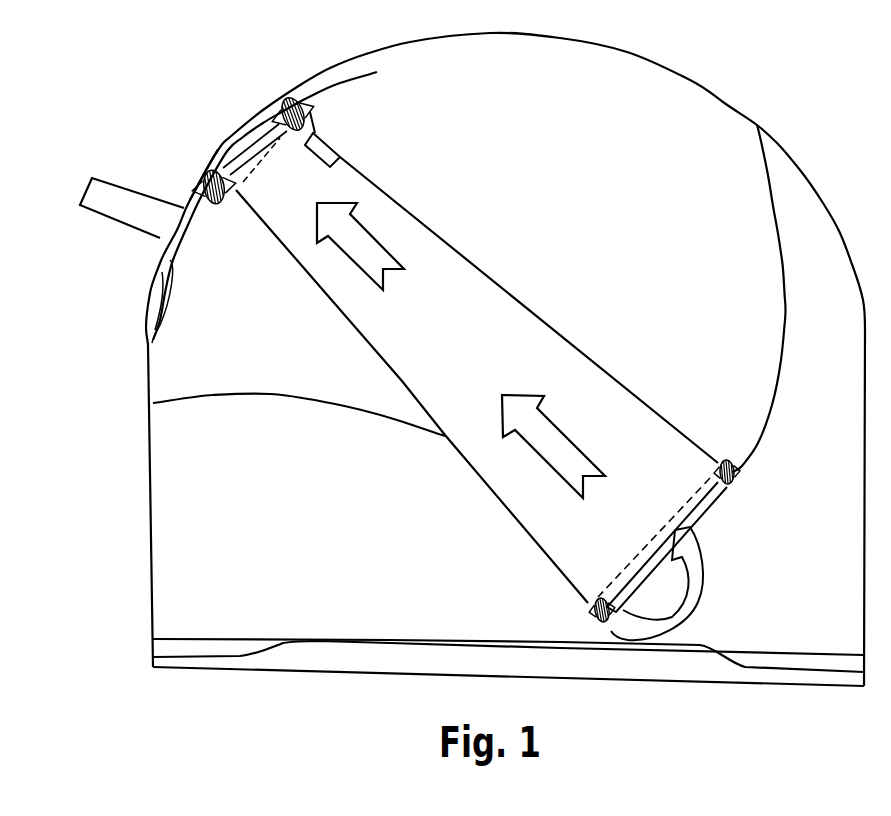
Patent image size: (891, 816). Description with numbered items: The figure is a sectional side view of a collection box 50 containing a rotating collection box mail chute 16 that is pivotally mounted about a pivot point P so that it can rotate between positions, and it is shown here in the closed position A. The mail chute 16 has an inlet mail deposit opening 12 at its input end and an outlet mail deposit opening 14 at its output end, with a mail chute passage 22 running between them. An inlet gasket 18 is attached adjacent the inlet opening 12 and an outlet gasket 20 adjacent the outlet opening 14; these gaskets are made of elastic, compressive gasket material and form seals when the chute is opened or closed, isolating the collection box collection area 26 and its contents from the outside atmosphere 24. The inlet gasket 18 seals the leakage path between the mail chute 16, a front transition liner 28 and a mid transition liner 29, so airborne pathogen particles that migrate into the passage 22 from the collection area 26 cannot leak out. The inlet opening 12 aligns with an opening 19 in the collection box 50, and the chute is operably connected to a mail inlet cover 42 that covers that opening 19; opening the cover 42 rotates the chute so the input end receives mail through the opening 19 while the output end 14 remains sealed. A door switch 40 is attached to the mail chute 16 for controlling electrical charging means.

The inlet mail deposit opening 12 is at (270, 160).
The outlet mail deposit opening 14 is at (676, 487).
The rotating collection box mail chute 16 is at (491, 260).
The inlet gasket 18 is at (223, 202).
The opening in collection box 19 is at (189, 180).
The outlet gasket 20 is at (740, 476).
The mail chute passage 22 is at (499, 364).
The outside atmosphere 24 is at (81, 47).
The collection box collection area 26 is at (366, 544).
The front transition liner 28 is at (357, 74).
The mid transition liner 29 is at (305, 397).
The door switch 40 is at (330, 137).
The mail inlet cover 42 is at (86, 190).
The collection box 50 is at (628, 53).
The closed position A is at (390, 194).
The pivot point P is at (454, 347).